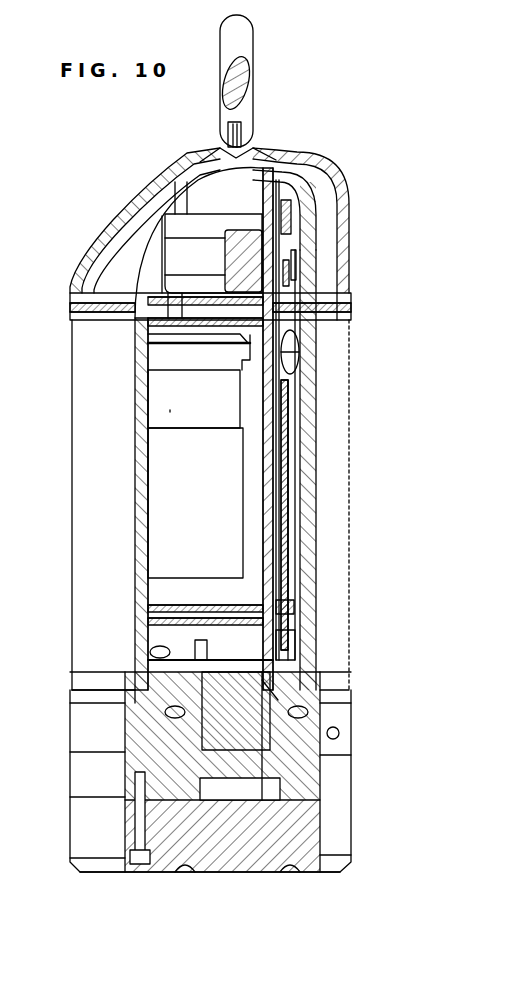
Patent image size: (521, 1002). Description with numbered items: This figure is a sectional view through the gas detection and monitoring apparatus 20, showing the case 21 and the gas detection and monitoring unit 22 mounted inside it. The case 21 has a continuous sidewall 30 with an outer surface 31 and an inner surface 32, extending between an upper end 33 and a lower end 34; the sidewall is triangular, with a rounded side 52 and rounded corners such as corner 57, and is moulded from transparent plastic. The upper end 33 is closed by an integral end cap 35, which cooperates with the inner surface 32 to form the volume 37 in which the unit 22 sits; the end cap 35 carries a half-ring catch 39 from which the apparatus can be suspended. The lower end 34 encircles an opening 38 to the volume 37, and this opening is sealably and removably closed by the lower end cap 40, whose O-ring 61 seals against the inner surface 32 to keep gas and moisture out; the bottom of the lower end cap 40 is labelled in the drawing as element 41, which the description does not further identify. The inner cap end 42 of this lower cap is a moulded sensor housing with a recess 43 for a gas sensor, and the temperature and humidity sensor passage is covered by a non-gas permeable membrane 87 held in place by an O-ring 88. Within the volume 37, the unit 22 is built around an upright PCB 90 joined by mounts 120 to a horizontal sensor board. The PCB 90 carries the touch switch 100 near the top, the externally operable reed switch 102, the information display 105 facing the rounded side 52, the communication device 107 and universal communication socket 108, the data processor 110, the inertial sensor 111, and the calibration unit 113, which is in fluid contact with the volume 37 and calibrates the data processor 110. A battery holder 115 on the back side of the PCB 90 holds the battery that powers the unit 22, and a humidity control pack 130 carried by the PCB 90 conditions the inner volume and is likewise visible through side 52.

The apparatus 20 is at (349, 146).
The case 21 is at (347, 356).
The gas detection and monitoring unit 22 is at (160, 408).
The continuous sidewall 30 is at (150, 368).
The outer surface 31 is at (112, 520).
The inner surface 32 is at (155, 452).
The upper end 33 is at (352, 312).
The lower end 34 is at (338, 742).
The end cap 35 is at (325, 180).
The volume 37 is at (238, 458).
The opening 38 is at (138, 842).
The catch 39 is at (252, 70).
The end cap 40 is at (300, 790).
The bottom surface 41 is at (205, 874).
The inner cap end 42 is at (263, 668).
The recess 43 is at (236, 711).
The side 52 is at (330, 490).
The corner 57 is at (72, 500).
The O-ring 61 is at (306, 714).
The non-gas permeable membrane 87 is at (266, 678).
The O-ring 88 is at (266, 686).
The PCB 90 is at (250, 337).
The touch switch 100 is at (221, 147).
The reed switch 102 is at (283, 450).
The information display 105 is at (308, 442).
The communication device 107 is at (285, 222).
The universal communication socket 108 is at (300, 264).
The data processor 110 is at (320, 528).
The inertial sensor 111 is at (300, 650).
The calibration unit 113 is at (308, 402).
The battery holder 115 is at (170, 410).
The mounts 120 is at (300, 630).
The humidity control pack 130 is at (302, 360).